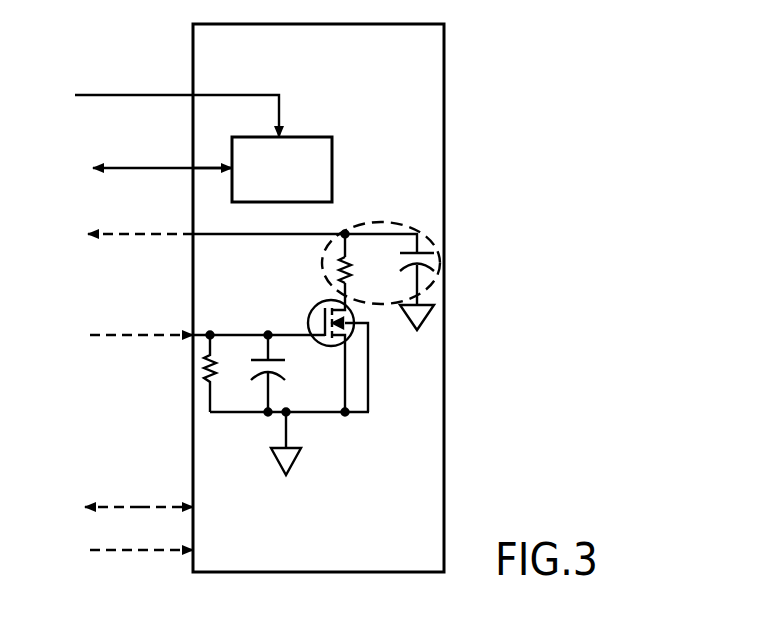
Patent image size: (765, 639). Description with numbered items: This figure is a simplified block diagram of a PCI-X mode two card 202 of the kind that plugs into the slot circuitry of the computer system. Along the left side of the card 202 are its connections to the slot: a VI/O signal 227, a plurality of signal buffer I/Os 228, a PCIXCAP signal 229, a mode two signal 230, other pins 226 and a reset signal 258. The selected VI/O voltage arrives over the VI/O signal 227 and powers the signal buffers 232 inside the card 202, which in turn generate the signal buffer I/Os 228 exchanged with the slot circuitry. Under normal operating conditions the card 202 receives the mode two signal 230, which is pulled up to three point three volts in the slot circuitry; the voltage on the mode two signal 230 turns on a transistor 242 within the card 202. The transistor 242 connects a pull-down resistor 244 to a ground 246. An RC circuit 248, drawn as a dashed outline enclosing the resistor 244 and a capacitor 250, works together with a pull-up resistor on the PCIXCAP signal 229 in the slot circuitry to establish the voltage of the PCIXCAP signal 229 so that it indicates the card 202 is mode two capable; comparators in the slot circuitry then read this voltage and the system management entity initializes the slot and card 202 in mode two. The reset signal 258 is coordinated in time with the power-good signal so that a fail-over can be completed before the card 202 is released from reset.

The PCI-X mode 2 card 202 is at (447, 180).
The other pins 226 is at (125, 507).
The VI/O signal 227 is at (110, 95).
The signal buffer I/Os 228 is at (123, 168).
The PCIXCAP signal 229 is at (115, 237).
The mode 2 signal 230 is at (137, 336).
The signal buffers 232 is at (332, 165).
The transistor 242 is at (348, 332).
The pull-down resistor 244 is at (333, 258).
The ground 246 is at (298, 456).
The RC circuit 248 is at (438, 283).
The capacitor 250 is at (432, 253).
The reset signal 258 is at (117, 552).